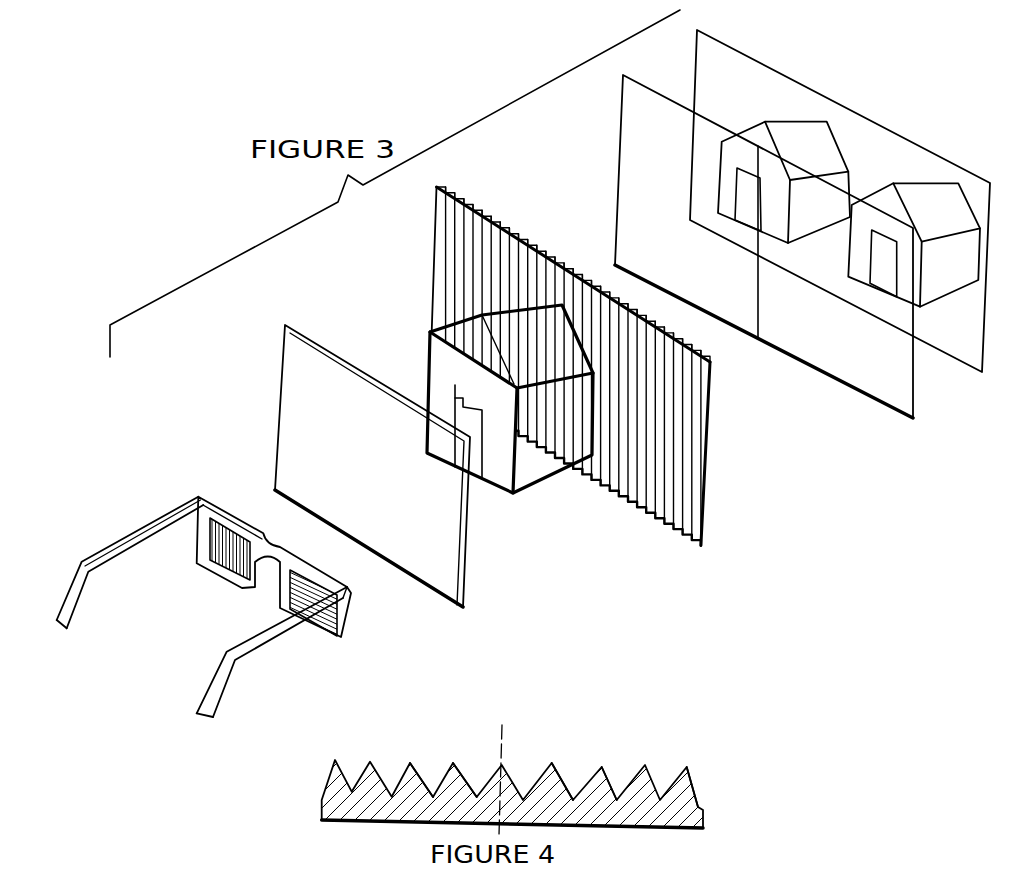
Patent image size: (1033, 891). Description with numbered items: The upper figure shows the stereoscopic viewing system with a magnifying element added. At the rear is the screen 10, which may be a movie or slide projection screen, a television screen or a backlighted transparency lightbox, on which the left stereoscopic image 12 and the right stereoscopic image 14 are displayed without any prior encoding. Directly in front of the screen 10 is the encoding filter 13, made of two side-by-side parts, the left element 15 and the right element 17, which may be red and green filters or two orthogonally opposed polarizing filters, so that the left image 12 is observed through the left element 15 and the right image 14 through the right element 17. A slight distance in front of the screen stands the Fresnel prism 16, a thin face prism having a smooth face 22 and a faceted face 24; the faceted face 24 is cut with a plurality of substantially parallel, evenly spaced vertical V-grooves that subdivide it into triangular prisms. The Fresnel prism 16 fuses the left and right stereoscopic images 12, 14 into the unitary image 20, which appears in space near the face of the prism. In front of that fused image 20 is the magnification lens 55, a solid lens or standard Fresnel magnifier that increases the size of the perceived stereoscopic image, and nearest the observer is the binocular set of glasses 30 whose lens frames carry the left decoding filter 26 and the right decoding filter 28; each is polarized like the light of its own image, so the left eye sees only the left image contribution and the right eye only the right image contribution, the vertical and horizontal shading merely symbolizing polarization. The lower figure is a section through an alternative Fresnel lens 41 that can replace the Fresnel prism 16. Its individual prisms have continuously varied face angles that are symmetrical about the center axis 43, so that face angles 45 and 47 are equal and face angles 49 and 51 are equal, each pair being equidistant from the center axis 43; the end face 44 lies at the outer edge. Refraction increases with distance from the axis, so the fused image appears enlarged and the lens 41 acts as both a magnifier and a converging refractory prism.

In FIG. 3, the screen 10 is at (957, 335).
In FIG. 3, the left stereoscopic image 12 is at (822, 137).
In FIG. 3, the right stereoscopic image 14 is at (947, 190).
In FIG. 3, the filter 13 is at (614, 176).
In FIG. 3, the left element 15 is at (643, 113).
In FIG. 3, the right element 17 is at (847, 368).
In FIG. 3, the Fresnel prism 16 is at (427, 238).
In FIG. 3, the smooth face 22 is at (711, 415).
In FIG. 3, the faceted face 24 is at (644, 492).
In FIG. 3, the unitary image 20 is at (514, 496).
In FIG. 3, the magnification lens 55 is at (447, 563).
In FIG. 3, the glasses 30 is at (235, 607).
In FIG. 3, the left filter 26 is at (242, 590).
In FIG. 3, the right filter 28 is at (331, 637).
In FIG. 4, the Fresnel lens 41 is at (710, 817).
In FIG. 4, the center axis 43 is at (502, 743).
In FIG. 4, the end lenticule facet 44 is at (690, 778).
In FIG. 4, the face angle 45 is at (453, 771).
In FIG. 4, the face angle 47 is at (553, 770).
In FIG. 4, the face angle 49 is at (410, 770).
In FIG. 4, the face angle 51 is at (603, 772).